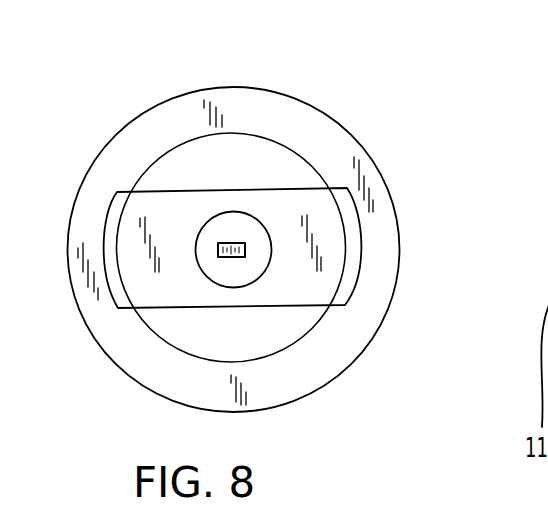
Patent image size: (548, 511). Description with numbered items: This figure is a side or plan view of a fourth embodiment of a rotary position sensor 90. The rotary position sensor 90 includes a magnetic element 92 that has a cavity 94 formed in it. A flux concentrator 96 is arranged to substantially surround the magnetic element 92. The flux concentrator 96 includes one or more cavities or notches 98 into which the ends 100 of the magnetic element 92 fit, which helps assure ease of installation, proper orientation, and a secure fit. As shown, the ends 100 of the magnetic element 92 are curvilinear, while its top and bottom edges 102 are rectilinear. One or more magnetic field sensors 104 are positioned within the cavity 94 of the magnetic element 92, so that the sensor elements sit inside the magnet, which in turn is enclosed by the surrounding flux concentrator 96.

The rotary position sensor 90 is at (366, 102).
The magnetic element 92 is at (307, 197).
The cavity 94 is at (242, 213).
The flux concentrator 96 is at (402, 267).
The cavities or notches 98 is at (130, 310).
The ends 100 is at (103, 235).
The top and bottom edges 102 is at (198, 190).
The magnetic field sensor 104 is at (232, 258).